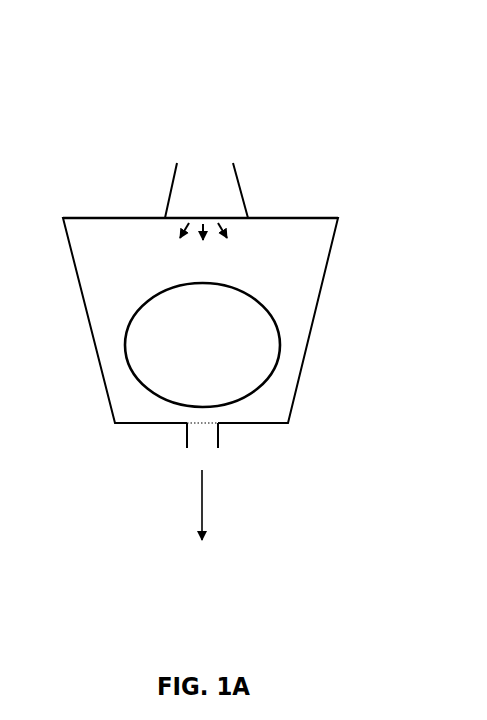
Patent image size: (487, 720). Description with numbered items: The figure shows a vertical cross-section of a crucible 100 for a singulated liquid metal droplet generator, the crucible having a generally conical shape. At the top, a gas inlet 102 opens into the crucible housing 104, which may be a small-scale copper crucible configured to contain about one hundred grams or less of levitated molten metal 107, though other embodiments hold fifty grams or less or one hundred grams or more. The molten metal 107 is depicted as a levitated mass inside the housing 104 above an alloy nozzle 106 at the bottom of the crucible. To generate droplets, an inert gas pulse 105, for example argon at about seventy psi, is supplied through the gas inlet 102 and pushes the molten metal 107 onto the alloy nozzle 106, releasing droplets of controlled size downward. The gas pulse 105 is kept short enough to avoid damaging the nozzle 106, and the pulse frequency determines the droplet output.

The crucible 100 is at (360, 105).
The gas inlet 102 is at (242, 193).
The crucible housing 104 is at (307, 346).
The gas pulse 105 is at (165, 238).
The alloy nozzle 106 is at (186, 441).
The levitated molten metal 107 is at (257, 300).